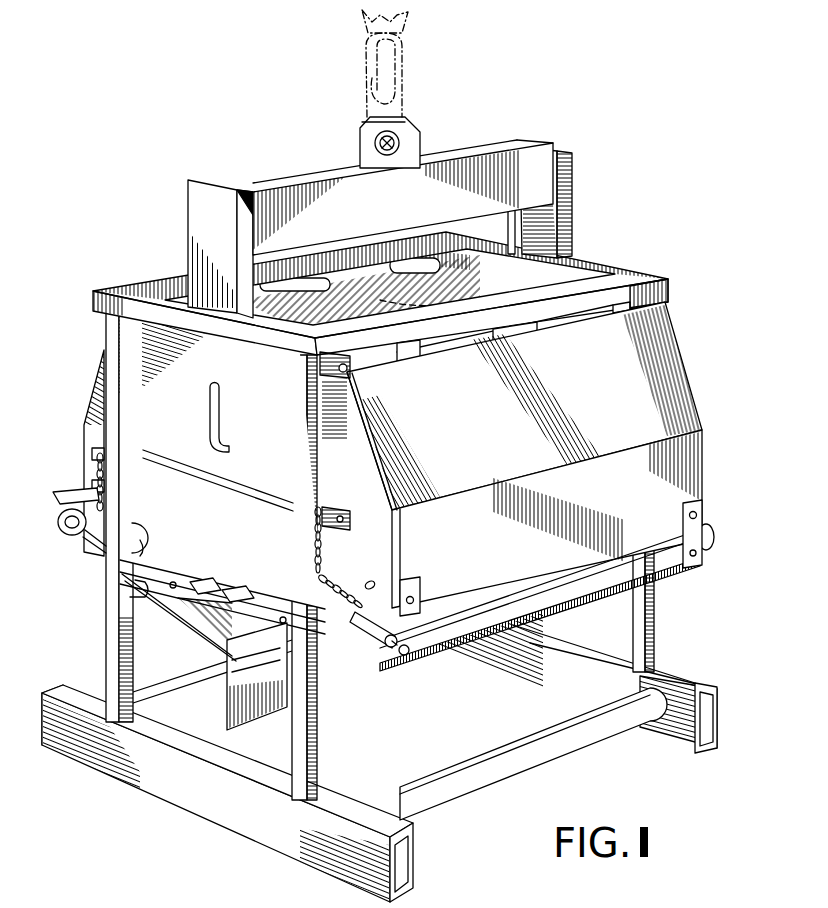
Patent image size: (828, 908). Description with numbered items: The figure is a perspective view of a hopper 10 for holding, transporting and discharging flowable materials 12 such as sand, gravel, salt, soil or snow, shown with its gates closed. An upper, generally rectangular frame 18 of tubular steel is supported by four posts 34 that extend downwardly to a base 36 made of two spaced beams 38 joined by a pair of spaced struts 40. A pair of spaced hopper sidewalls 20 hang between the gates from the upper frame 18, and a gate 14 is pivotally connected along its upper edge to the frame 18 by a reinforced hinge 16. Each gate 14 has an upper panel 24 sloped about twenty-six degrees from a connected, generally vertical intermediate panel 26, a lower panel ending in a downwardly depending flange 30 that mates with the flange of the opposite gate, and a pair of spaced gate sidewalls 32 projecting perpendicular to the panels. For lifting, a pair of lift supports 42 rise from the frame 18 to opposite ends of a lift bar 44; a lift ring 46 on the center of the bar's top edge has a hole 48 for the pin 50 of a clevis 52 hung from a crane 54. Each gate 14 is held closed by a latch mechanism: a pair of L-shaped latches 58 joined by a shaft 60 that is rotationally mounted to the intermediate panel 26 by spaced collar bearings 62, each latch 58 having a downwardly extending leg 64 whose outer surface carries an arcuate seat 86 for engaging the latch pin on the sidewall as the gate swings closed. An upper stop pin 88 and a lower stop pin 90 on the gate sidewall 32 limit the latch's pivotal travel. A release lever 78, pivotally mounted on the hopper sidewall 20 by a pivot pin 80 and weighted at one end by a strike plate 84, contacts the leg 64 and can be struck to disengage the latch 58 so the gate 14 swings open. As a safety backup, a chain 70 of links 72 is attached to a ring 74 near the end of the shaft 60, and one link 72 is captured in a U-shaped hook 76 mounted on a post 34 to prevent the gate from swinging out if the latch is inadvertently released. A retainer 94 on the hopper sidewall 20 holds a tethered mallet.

The hopper 10 is at (690, 178).
The flowable materials 12 is at (410, 436).
The gate 14 is at (83, 420).
The hinge 16 is at (667, 300).
The upper frame 18 is at (618, 267).
The hopper sidewall 20 is at (208, 516).
The upper panel 24 is at (568, 404).
The intermediate panel 26 is at (495, 562).
The flange 30 is at (233, 723).
The gate sidewall 32 is at (88, 455).
The post 34 is at (108, 340).
The base 36 is at (145, 797).
The beam 38 is at (720, 705).
The strut 40 is at (565, 758).
The lift support 42 is at (190, 215).
The lift bar 44 is at (300, 180).
The lift ring 46 is at (386, 130).
The hole 48 is at (398, 137).
The pin 50 is at (406, 140).
The clevis 52 is at (404, 78).
The crane 54 is at (410, 14).
The L-shaped latch 58 is at (88, 553).
The shaft 60 is at (637, 548).
The collar bearing 62 is at (422, 592).
The leg 64 is at (145, 538).
The chain 70 is at (92, 478).
The link 72 is at (58, 497).
The ring 74 is at (412, 660).
The hook 76 is at (340, 518).
The release lever 78 is at (250, 598).
The pivot pin 80 is at (157, 612).
The strike plate 84 is at (208, 578).
The arcuate seat 86 is at (150, 546).
The upper stop pin 88 is at (374, 578).
The lower stop pin 90 is at (372, 655).
The retainer 94 is at (222, 425).